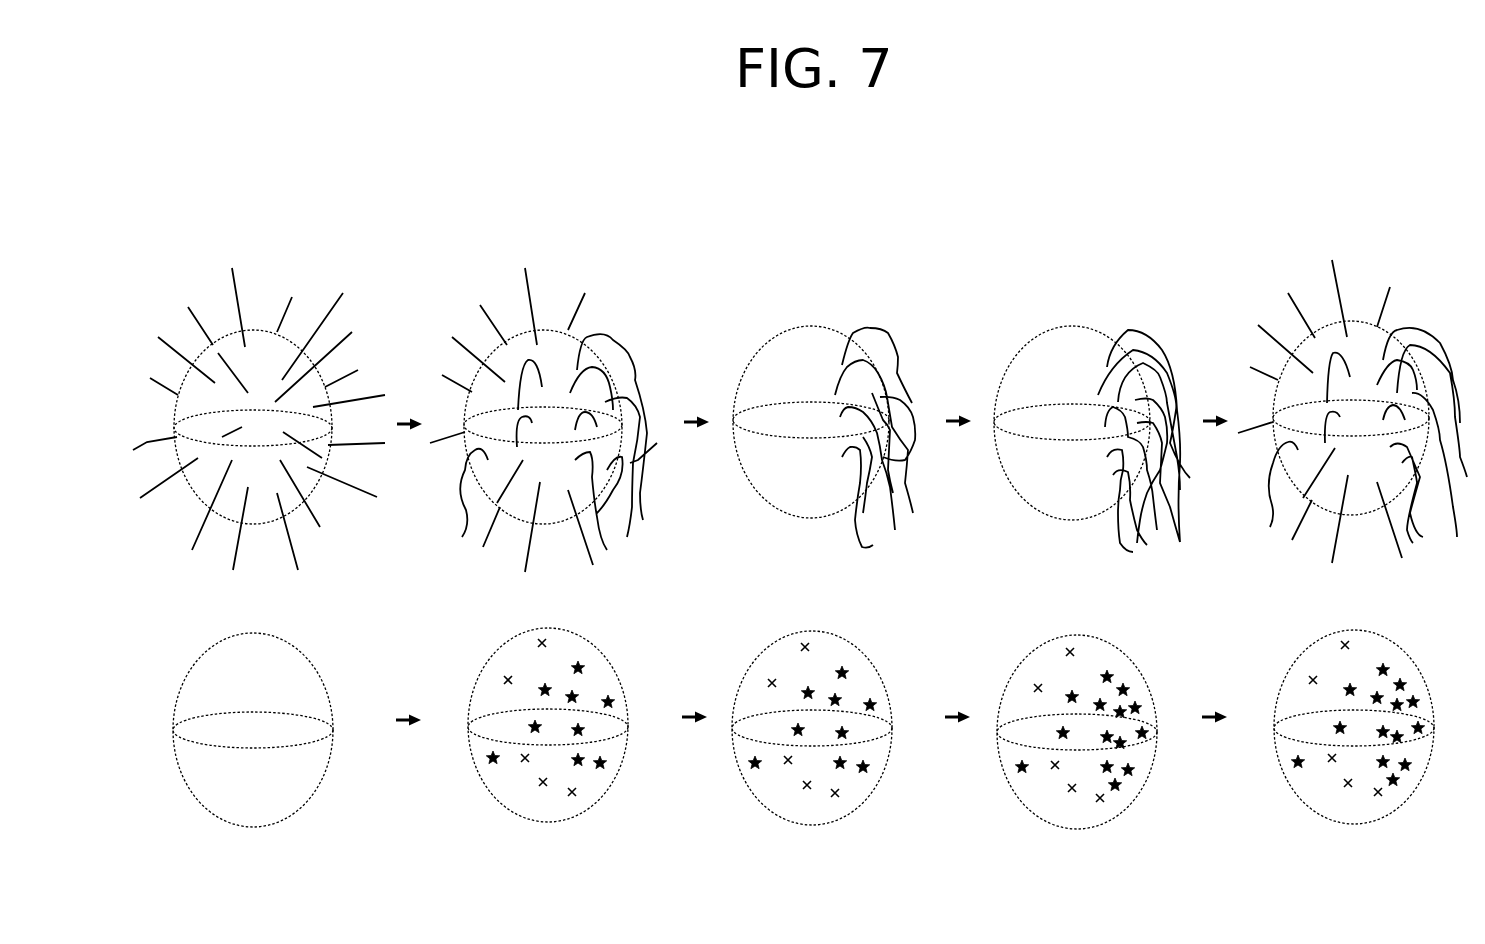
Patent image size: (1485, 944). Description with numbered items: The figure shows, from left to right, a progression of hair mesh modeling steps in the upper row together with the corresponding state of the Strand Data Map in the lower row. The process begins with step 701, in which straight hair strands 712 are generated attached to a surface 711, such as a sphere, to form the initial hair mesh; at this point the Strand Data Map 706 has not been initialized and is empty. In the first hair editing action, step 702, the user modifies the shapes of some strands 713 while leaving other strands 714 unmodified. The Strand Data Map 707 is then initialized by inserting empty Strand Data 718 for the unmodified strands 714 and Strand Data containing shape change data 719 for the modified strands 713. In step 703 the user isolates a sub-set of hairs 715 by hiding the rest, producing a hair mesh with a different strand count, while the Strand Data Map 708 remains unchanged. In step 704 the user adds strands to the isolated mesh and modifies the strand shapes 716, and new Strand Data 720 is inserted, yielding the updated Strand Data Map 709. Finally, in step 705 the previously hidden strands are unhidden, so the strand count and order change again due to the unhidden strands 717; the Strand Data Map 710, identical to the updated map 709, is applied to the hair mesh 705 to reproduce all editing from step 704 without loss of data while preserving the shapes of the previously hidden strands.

The step of generating straight hair strands 701 is at (241, 407).
The first step of hair editing action 702 is at (547, 408).
The step of isolating a sub-set of hairs 703 is at (834, 424).
The step of adding strands and modifying strand shapes 704 is at (1099, 423).
The step of unhiding hair strands / hair mesh 705 is at (1346, 400).
The Strand Data Map 706 is at (253, 744).
The Strand Data Map 707 is at (552, 741).
The Strand Data Map 708 is at (812, 743).
The updated Strand Data Map 709 is at (1089, 745).
The Strand Data Map 710 is at (1354, 742).
The surface 711 is at (192, 496).
The straight hair strands 712 is at (159, 487).
The modified strands 713 is at (648, 453).
The unmodified strands 714 is at (526, 286).
The sub-set of hairs 715 is at (920, 448).
The strand shapes 716 is at (1178, 428).
The unhidden strands 717 is at (1326, 384).
The empty Strand Data 718 is at (536, 643).
The shape change data 719 is at (587, 668).
The new Strand Data 720 is at (1147, 731).